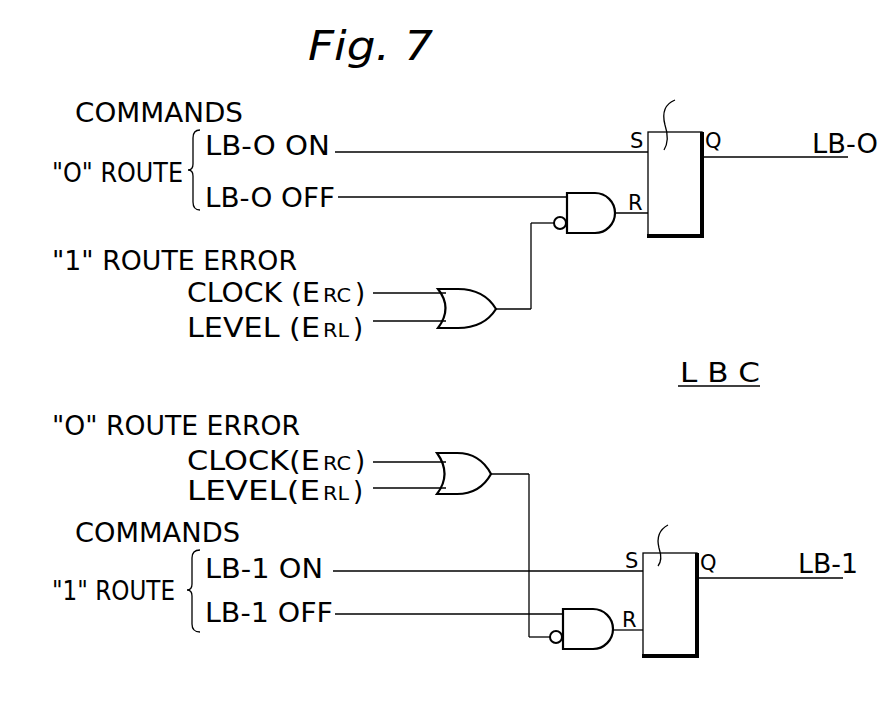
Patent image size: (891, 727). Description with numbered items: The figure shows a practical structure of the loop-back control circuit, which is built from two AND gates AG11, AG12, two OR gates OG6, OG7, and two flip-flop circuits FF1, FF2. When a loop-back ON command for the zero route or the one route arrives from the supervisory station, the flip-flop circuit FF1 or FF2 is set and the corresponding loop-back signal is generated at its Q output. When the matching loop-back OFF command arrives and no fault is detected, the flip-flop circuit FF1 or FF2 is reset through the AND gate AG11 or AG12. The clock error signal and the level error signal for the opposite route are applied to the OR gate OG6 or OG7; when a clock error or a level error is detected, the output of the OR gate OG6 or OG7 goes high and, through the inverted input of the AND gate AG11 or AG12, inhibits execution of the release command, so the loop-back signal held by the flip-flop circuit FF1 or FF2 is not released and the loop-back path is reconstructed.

The OR gate OG6 is at (458, 289).
The AND gate AG11 is at (585, 233).
The flip-flop FF1 is at (702, 217).
The OR gate OG7 is at (462, 453).
The AND gate AG12 is at (572, 649).
The flip-flop FF2 is at (697, 643).